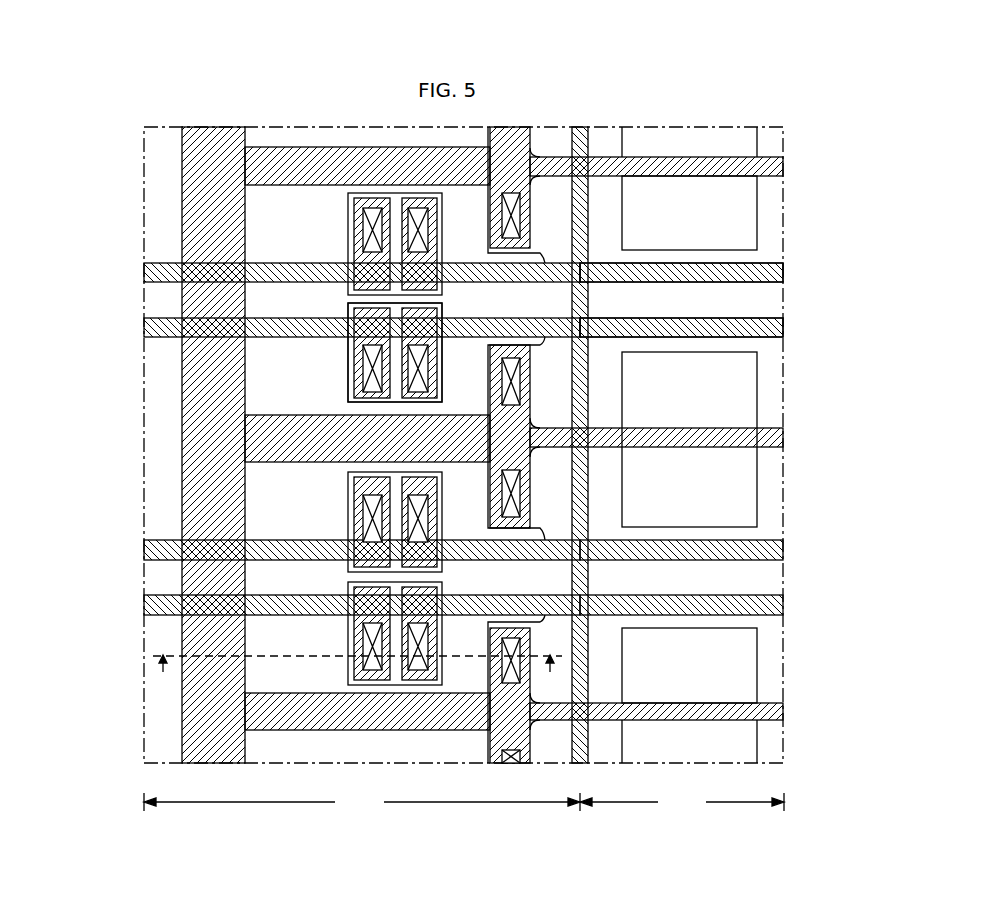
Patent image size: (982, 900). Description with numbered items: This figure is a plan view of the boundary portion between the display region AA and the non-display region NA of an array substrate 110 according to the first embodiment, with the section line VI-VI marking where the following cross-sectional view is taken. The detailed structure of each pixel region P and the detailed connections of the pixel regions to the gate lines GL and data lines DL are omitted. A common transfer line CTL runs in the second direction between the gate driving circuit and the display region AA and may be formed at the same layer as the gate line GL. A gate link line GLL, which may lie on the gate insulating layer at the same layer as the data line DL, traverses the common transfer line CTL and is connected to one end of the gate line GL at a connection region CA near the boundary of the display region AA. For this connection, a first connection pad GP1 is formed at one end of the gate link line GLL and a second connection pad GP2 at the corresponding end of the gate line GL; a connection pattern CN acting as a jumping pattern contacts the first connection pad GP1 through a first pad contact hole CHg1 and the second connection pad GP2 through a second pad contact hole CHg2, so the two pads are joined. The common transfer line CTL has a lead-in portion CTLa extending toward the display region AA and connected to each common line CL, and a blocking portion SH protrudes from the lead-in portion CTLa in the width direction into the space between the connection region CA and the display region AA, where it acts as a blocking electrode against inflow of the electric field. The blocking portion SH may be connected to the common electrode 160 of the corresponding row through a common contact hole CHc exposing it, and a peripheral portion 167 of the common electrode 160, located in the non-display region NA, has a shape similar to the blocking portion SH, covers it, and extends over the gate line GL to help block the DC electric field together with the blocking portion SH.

The display substrate 110 is at (419, 887).
The common transfer line CTL is at (182, 503).
The lead-in portion CTLa is at (300, 438).
The gate link line GLL is at (148, 328).
The gate line GL is at (783, 328).
The common electrode 160 is at (717, 328).
The data line DL is at (588, 300).
The common line CL is at (773, 440).
The pixel region P is at (681, 224).
The blocking portion SH is at (530, 401).
The common contact hole CHc is at (519, 379).
The peripheral portion 167 is at (547, 341).
The connection pattern CN is at (348, 402).
The connection region CA is at (344, 348).
The first connection pad GP1 is at (354, 380).
The second connection pad GP2 is at (437, 362).
The first pad contact hole CHg1 is at (371, 232).
The second pad contact hole CHg2 is at (418, 226).
The line VI- VI is at (357, 677).
The non-display region NA is at (362, 802).
The display region AA is at (682, 802).